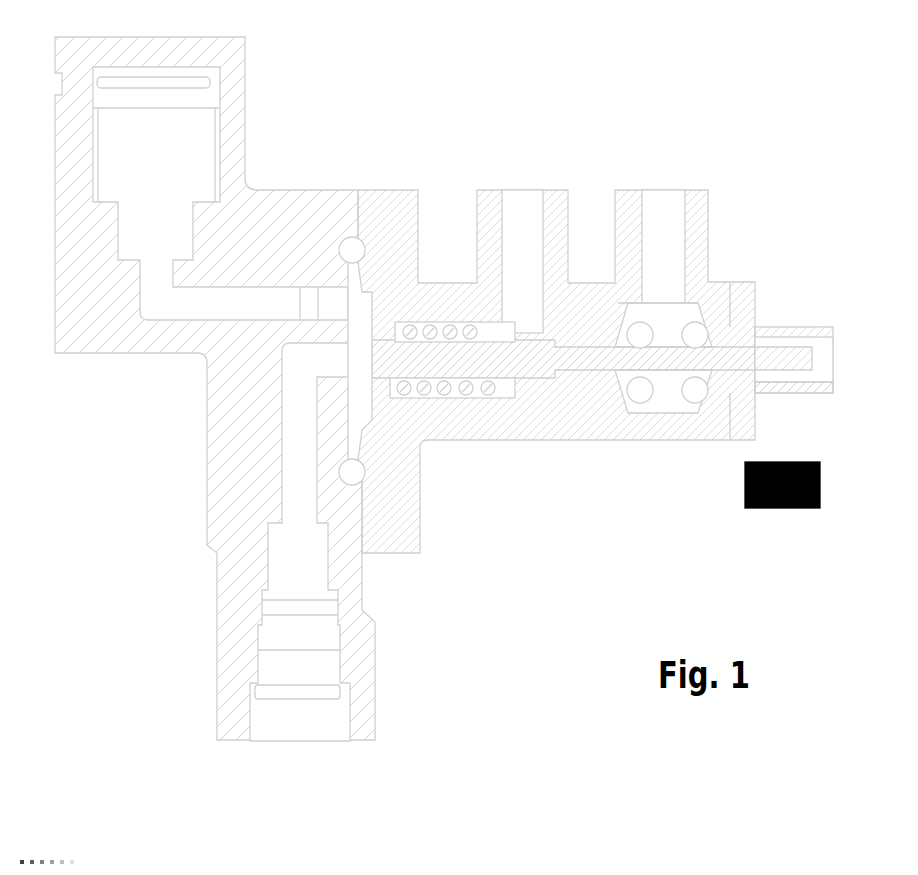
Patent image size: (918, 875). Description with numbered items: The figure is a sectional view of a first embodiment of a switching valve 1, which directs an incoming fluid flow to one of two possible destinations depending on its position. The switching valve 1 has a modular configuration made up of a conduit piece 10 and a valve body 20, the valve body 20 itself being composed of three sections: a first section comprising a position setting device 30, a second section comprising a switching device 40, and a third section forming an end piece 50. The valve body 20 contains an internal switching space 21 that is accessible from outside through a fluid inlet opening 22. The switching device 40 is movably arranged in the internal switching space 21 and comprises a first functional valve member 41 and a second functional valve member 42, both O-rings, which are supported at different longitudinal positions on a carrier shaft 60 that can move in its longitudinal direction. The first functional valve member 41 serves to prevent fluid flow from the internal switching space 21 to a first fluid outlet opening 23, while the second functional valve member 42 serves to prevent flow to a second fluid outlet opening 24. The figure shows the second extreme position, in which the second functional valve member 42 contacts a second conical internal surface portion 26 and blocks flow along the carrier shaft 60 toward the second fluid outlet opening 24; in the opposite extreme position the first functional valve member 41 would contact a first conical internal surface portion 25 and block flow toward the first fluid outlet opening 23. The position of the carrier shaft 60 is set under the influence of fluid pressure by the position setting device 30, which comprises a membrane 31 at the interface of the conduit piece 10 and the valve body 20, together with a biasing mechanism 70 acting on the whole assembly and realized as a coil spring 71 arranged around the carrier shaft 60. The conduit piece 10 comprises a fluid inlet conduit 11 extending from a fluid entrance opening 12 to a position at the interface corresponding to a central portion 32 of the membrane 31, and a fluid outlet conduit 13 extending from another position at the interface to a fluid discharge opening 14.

The switching valve 1 is at (735, 142).
The conduit piece 10 is at (292, 208).
The fluid inlet conduit 11 is at (297, 472).
The fluid entrance opening 12 is at (297, 728).
The fluid outlet conduit 13 is at (210, 303).
The fluid discharge opening 14 is at (150, 45).
The valve body 20 is at (533, 425).
The internal switching space 21 is at (672, 325).
The fluid inlet opening 22 is at (663, 200).
The first fluid outlet opening 23 is at (522, 200).
The second fluid outlet opening 24 is at (827, 355).
The first conical internal surface portion 25 is at (620, 327).
The second conical internal surface portion 26 is at (702, 322).
The position setting device 30 is at (385, 240).
The membrane 31 is at (362, 427).
The central portion of the membrane 32 is at (368, 357).
The switching device 40 is at (635, 278).
The first functional valve member 41 is at (642, 382).
The second functional valve member 42 is at (698, 383).
The end piece 50 is at (795, 385).
The carrier shaft 60 is at (752, 357).
The biasing mechanism 70 is at (465, 298).
The coil spring 71 is at (468, 392).